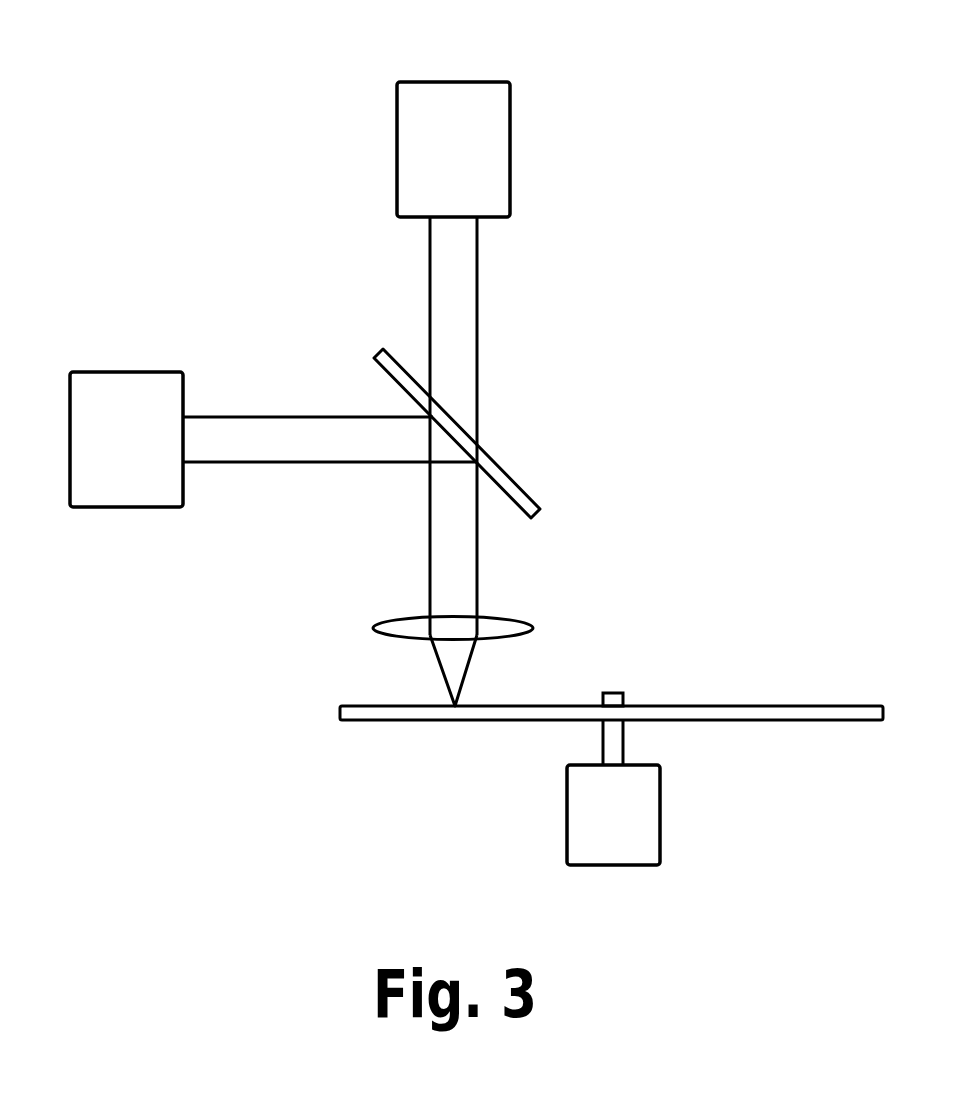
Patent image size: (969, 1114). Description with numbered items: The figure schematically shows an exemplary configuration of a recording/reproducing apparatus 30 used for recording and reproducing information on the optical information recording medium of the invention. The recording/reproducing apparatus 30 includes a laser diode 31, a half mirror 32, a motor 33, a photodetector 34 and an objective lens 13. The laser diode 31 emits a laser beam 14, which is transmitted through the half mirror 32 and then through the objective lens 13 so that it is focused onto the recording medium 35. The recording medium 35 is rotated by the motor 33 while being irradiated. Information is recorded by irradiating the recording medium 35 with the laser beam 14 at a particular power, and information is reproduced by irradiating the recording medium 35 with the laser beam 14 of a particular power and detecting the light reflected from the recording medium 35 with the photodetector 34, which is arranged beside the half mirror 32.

The recording/reproducing apparatus 30 is at (88, 125).
The laser diode 31 is at (511, 148).
The half mirror 32 is at (500, 467).
The motor 33 is at (660, 818).
The photodetector 34 is at (115, 372).
The recording medium 35 is at (773, 706).
The objective lens 13 is at (533, 625).
The laser beam 14 is at (467, 667).